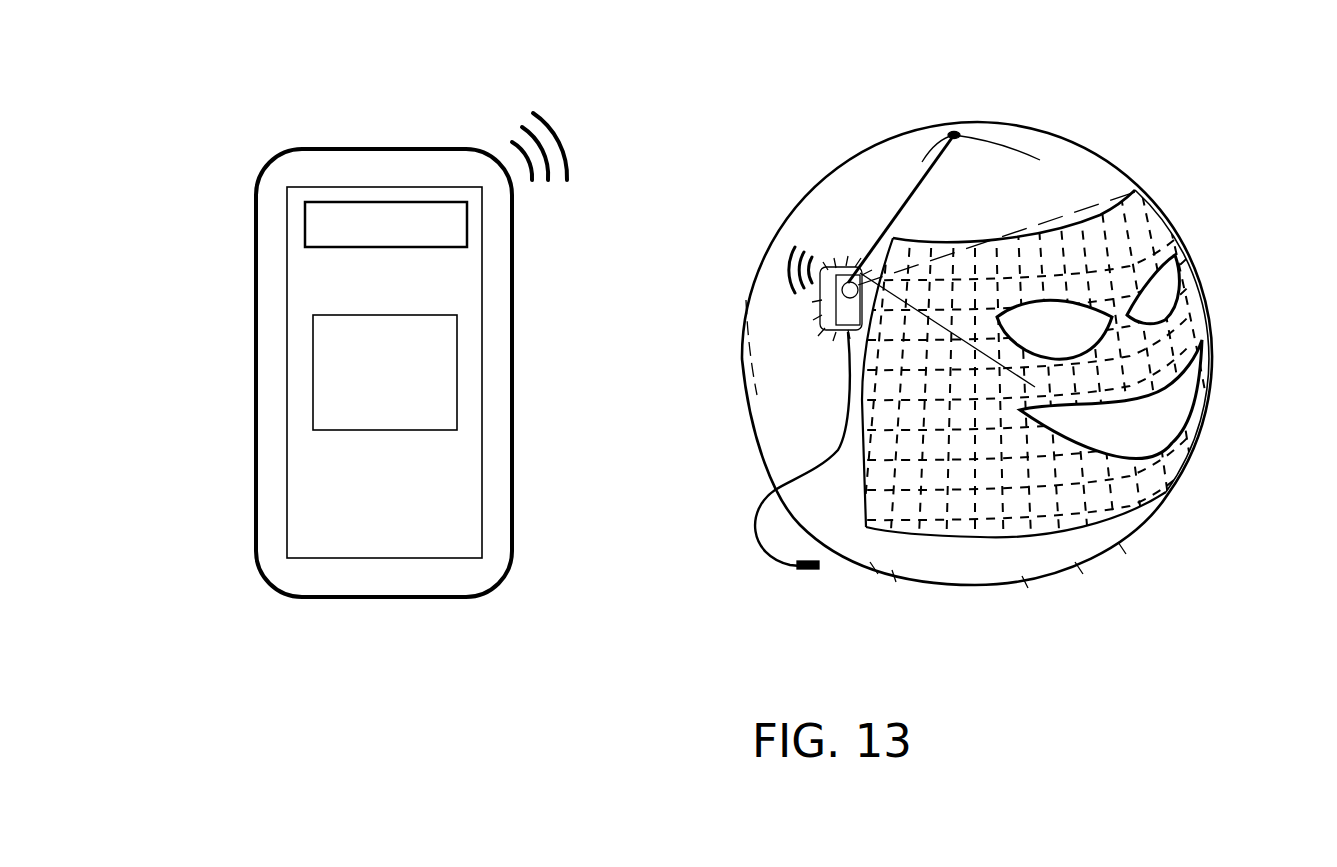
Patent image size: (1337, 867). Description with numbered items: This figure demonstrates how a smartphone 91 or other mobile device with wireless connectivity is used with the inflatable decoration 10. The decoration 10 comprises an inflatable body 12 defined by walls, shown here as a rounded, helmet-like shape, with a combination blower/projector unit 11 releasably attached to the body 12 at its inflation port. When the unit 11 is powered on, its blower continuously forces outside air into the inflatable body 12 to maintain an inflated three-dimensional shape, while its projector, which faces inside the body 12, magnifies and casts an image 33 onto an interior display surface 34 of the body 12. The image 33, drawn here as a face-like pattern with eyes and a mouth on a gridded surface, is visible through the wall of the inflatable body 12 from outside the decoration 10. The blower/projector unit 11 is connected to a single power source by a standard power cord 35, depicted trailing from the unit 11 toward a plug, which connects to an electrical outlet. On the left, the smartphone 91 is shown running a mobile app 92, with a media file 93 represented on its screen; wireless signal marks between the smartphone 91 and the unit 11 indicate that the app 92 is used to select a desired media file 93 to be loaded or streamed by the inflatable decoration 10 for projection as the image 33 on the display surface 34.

The inflatable decoration 10 is at (1023, 313).
The blower/projector unit 11 is at (842, 268).
The inflatable body 12 is at (1048, 160).
The image 33 is at (1202, 300).
The interior display surface 34 is at (1110, 508).
The power cord 35 is at (815, 468).
The smartphone 91 is at (264, 177).
The mobile app 92 is at (407, 202).
The media file 93 is at (357, 431).